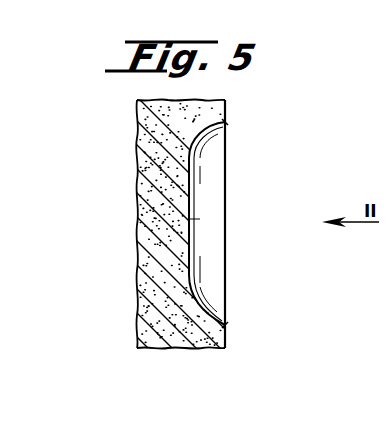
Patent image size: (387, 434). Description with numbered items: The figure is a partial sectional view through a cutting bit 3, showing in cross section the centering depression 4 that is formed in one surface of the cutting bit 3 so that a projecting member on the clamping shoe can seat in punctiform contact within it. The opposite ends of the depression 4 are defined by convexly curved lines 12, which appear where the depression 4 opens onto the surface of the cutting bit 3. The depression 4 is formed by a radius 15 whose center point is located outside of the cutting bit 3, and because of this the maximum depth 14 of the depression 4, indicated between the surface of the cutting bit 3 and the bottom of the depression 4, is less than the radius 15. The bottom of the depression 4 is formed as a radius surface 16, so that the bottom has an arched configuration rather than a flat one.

The cutting bit 3 is at (245, 336).
The centering depression 4 is at (213, 196).
The convexly curved lines 12 is at (228, 124).
The maximum depth 14 is at (148, 254).
The radius 15 is at (197, 154).
The radius surface 16 is at (191, 217).